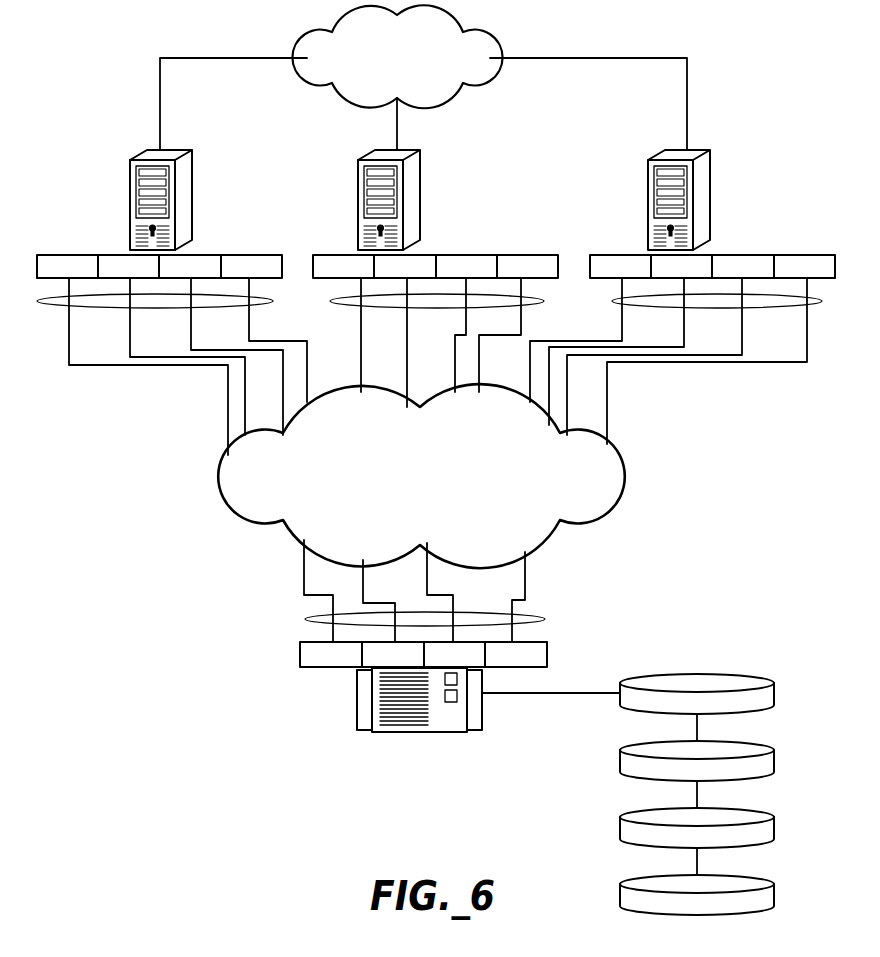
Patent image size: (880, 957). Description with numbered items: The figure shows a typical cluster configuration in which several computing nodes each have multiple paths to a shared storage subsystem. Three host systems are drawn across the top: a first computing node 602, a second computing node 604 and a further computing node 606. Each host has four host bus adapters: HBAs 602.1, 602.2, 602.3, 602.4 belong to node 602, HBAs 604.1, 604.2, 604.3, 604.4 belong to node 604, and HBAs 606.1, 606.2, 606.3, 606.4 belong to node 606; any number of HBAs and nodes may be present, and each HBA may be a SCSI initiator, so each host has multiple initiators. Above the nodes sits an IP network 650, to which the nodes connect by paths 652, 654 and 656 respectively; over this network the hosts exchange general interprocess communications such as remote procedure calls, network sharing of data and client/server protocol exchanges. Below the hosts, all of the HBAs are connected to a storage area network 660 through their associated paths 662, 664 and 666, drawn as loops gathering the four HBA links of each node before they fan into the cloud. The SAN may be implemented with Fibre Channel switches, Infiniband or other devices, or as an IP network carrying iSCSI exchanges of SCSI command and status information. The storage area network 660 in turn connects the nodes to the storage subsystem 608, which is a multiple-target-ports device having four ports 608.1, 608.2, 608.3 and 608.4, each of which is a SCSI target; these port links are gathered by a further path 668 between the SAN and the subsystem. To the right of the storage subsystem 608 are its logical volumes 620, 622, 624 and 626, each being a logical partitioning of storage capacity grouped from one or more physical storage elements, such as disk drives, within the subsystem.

The computing node 602 is at (185, 150).
The computing node 604 is at (422, 166).
The computing node 606 is at (697, 150).
The host bus adapter 602.1 is at (132, 355).
The host bus adapter 602.2 is at (171, 345).
The host bus adapter 602.3 is at (221, 345).
The host bus adapter 602.4 is at (264, 328).
The host bus adapter 604.1 is at (343, 323).
The host bus adapter 604.2 is at (405, 331).
The host bus adapter 604.3 is at (466, 323).
The host bus adapter 604.4 is at (518, 323).
The host bus adapter 606.1 is at (590, 328).
The host bus adapter 606.2 is at (630, 340).
The host bus adapter 606.3 is at (670, 345).
The host bus adapter 606.4 is at (721, 349).
The storage subsystem 608 is at (487, 722).
The storage subsystem port 608.1 is at (331, 603).
The storage subsystem port 608.2 is at (393, 613).
The storage subsystem port 608.3 is at (454, 605).
The storage subsystem port 608.4 is at (516, 609).
The volume 620 is at (718, 673).
The volume 622 is at (620, 766).
The volume 624 is at (620, 829).
The volume 626 is at (620, 892).
The IP network 650 is at (479, 85).
The path 652 is at (160, 108).
The path 654 is at (397, 132).
The path 656 is at (687, 82).
The storage area network 660 is at (539, 547).
The path 662 is at (273, 302).
The path 664 is at (544, 302).
The path 666 is at (612, 301).
The storage subsystem path 668 is at (545, 619).